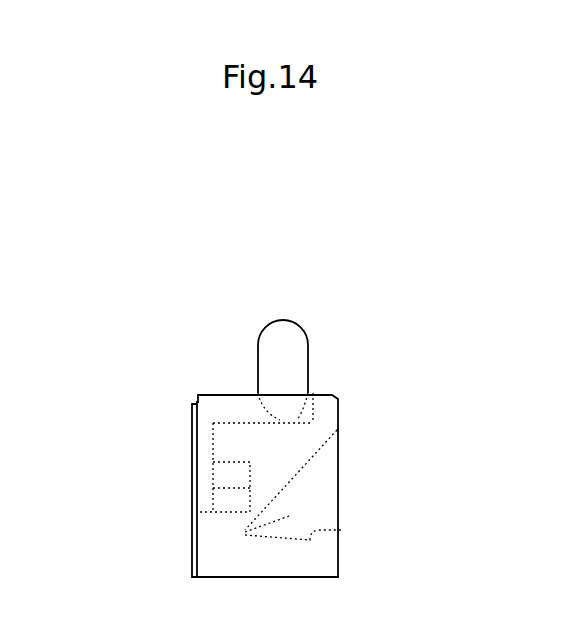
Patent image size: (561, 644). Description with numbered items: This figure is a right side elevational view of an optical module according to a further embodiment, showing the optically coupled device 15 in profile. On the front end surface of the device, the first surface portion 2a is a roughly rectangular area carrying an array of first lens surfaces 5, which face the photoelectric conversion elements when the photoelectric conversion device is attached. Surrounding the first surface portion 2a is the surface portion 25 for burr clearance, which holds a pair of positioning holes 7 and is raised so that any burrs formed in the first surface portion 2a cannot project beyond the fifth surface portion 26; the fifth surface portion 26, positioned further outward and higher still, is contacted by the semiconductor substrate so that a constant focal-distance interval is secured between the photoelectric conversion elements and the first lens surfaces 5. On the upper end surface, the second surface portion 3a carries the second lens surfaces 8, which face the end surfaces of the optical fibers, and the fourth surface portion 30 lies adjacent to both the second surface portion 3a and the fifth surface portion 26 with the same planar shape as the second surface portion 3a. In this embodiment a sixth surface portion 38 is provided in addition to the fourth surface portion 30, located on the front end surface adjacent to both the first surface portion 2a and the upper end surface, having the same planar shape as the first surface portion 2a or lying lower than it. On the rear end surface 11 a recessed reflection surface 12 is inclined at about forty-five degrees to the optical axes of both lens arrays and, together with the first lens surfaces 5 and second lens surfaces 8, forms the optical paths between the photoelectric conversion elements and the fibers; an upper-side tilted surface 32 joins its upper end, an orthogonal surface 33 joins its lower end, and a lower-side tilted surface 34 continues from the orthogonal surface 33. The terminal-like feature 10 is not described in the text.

The optically coupled device 15 is at (131, 294).
The terminal 10 is at (280, 320).
The rear end surface 11 is at (340, 412).
The fourth surface portion 30 is at (238, 418).
The second lens surfaces 8 is at (260, 391).
The second surface portion 3a is at (302, 395).
The sixth surface portion 38 is at (210, 424).
The first surface portion 2a is at (215, 468).
The first lens surfaces 5 is at (215, 485).
The positioning holes 7 is at (215, 492).
The surface portion for burr clearance 25 is at (193, 513).
The fifth surface portion 26 is at (193, 552).
The upper-side tilted surface 32 is at (342, 447).
The reflection surface 12 is at (287, 478).
The orthogonal surface 33 is at (285, 516).
The lower-side tilted surface 34 is at (342, 533).